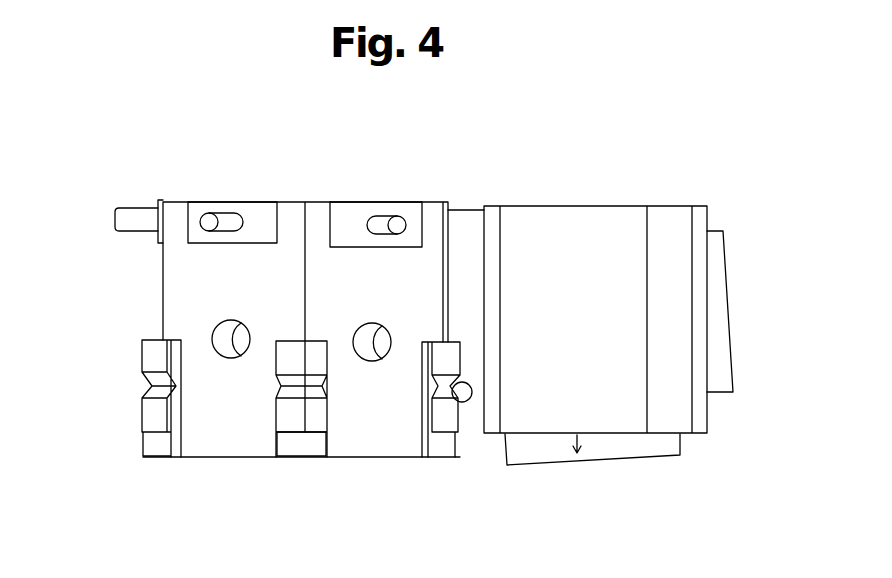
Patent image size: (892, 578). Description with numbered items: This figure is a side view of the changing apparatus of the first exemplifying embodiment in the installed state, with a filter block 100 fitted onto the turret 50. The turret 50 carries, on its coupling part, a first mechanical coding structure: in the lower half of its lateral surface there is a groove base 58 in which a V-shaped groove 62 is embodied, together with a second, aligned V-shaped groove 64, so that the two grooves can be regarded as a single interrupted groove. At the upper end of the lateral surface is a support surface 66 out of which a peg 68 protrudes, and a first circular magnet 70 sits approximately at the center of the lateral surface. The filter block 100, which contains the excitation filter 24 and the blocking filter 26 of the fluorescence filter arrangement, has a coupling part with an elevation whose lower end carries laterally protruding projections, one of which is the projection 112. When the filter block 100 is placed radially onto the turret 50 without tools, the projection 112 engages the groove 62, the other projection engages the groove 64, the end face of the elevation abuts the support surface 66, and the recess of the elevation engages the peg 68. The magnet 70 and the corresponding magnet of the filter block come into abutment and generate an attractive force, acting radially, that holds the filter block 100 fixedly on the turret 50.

The turret 50 is at (178, 188).
The support surface 66 is at (339, 216).
The peg 68 is at (405, 222).
The groove base 58 is at (312, 358).
The V-shaped groove 62 is at (310, 393).
The first circular magnet 70 is at (380, 350).
The V-shaped groove 64 is at (455, 400).
The projection 112 is at (473, 402).
The filter block 100 is at (578, 200).
The excitation filter 24 is at (727, 290).
The blocking filter 26 is at (618, 458).